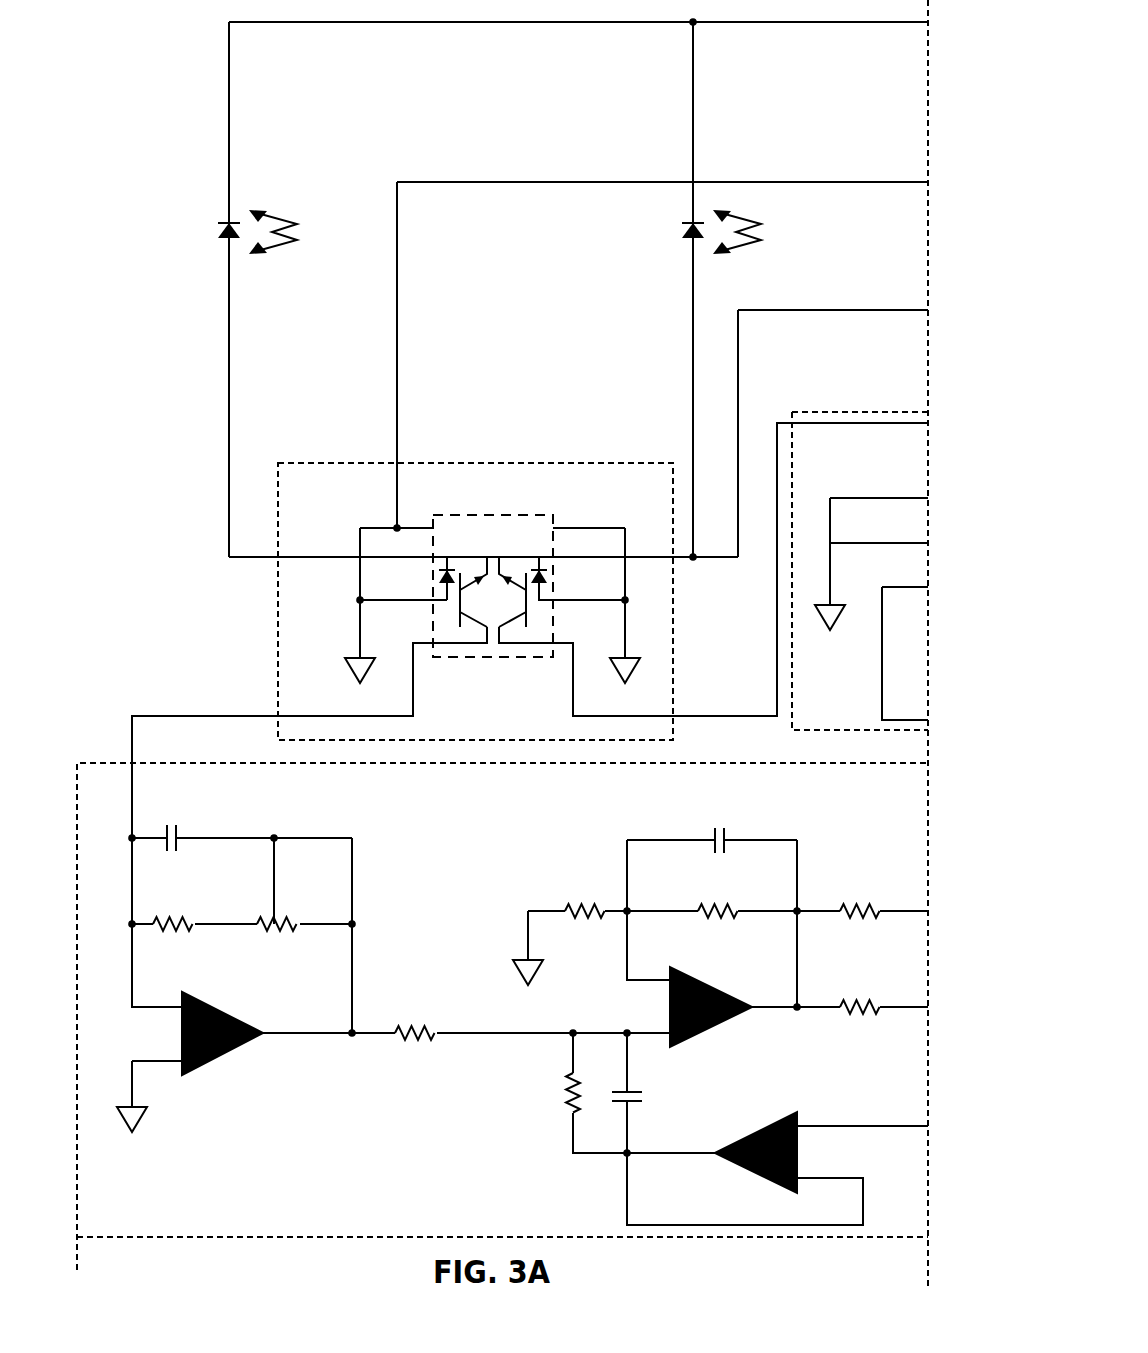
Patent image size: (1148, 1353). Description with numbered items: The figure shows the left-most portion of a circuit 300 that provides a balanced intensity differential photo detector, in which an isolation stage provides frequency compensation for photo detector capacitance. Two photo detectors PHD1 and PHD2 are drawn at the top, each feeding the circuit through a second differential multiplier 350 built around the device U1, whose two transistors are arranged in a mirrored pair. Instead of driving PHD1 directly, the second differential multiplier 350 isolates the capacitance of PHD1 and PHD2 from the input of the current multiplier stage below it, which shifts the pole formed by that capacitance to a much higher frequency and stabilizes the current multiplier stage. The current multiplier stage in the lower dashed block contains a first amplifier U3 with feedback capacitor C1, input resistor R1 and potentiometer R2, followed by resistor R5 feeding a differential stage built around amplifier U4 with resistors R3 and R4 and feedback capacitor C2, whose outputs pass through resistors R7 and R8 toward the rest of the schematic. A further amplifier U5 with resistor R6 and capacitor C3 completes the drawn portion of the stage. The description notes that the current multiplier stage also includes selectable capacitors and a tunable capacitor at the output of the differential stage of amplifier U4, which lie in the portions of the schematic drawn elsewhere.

The circuit 300 is at (194, 59).
The second differential multiplier 350 is at (677, 627).
The element U1 is at (492, 572).
The element PHD1 is at (689, 232).
The element PHD2 is at (226, 232).
The element U3 is at (223, 1029).
The amplifier U4 is at (714, 1004).
The element U5 is at (758, 1145).
The element C1 is at (199, 815).
The element C2 is at (754, 819).
The element C3 is at (670, 1092).
The element R1 is at (173, 904).
The element R2 is at (273, 905).
The element R3 is at (585, 891).
The element R4 is at (714, 901).
The element R5 is at (415, 1008).
The element R6 is at (559, 1094).
The element R7 is at (860, 887).
The element R8 is at (860, 983).